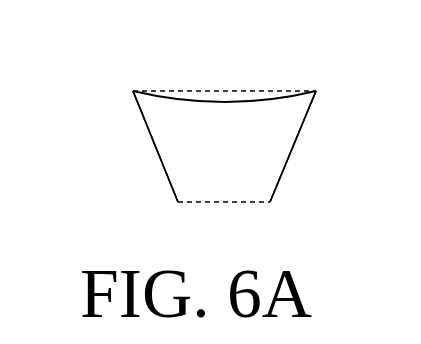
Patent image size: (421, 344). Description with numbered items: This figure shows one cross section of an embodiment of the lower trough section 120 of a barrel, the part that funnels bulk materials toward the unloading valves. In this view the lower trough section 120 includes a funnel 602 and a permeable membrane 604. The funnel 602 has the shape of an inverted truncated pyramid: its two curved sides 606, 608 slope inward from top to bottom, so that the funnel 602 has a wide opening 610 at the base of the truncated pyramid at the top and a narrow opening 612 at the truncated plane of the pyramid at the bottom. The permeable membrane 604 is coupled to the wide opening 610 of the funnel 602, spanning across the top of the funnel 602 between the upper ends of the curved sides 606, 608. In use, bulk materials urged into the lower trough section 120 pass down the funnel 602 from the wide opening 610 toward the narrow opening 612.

The lower trough section 120 is at (125, 75).
The funnel 602 is at (238, 156).
The permeable membrane 604 is at (223, 102).
The curved side 606 is at (295, 142).
The curved side 608 is at (157, 149).
The wide opening 610 is at (212, 91).
The narrow opening 612 is at (205, 203).